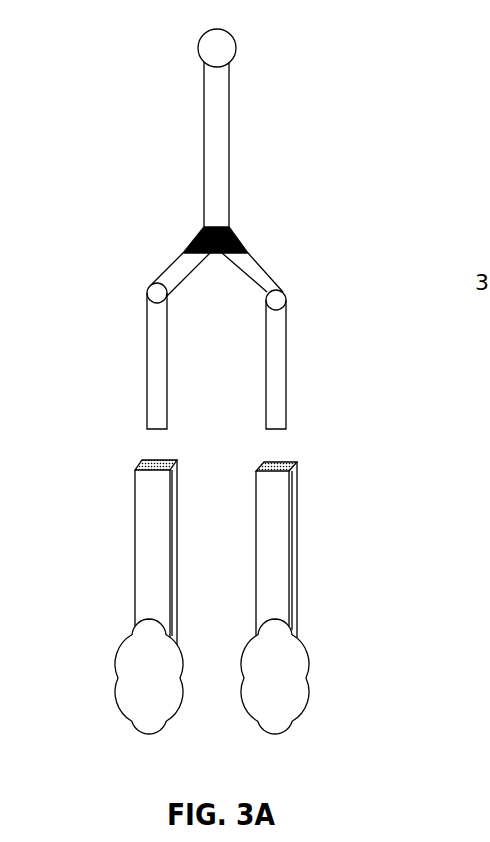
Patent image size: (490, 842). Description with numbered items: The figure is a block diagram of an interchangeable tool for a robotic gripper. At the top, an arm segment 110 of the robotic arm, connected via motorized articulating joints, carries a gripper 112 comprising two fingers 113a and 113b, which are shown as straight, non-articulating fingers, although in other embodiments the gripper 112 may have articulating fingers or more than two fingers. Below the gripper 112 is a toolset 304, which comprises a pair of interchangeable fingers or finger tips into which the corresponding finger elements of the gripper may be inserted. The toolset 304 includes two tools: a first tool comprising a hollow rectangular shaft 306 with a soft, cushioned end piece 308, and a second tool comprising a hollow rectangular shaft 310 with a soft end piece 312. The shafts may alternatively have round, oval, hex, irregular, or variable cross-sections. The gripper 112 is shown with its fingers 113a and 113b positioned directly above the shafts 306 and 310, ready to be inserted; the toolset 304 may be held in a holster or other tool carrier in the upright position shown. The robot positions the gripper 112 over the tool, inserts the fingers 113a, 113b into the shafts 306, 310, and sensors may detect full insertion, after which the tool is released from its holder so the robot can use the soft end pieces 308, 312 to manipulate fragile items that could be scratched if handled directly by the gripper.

The arm segment 110 is at (229, 128).
The gripper 112 is at (263, 273).
The finger 113a is at (150, 360).
The finger 113b is at (287, 357).
The toolset 304 is at (256, 600).
The hollow rectangular shaft 306 is at (135, 527).
The soft end piece 308 is at (115, 653).
The hollow rectangular shaft 310 is at (295, 525).
The soft end piece 312 is at (321, 676).